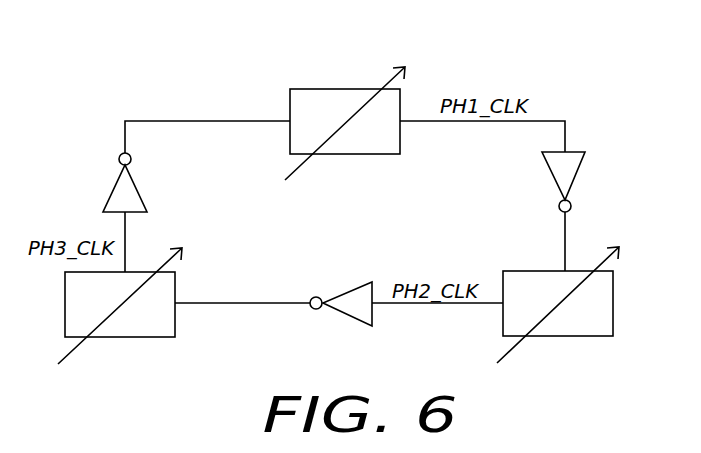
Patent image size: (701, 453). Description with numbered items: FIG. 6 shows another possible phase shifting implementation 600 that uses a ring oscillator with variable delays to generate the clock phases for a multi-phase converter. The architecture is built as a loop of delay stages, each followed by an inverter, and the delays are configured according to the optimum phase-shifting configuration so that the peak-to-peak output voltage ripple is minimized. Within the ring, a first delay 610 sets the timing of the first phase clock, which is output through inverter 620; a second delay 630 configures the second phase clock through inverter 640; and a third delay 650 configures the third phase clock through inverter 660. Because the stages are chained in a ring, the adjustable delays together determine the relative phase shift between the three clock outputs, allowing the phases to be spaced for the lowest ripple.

The phase shifting implementation 600 is at (143, 45).
The delay 610 is at (321, 89).
The inverter 620 is at (575, 185).
The delay 630 is at (520, 271).
The inverter 640 is at (350, 318).
The delay 650 is at (150, 337).
The inverter 660 is at (113, 181).